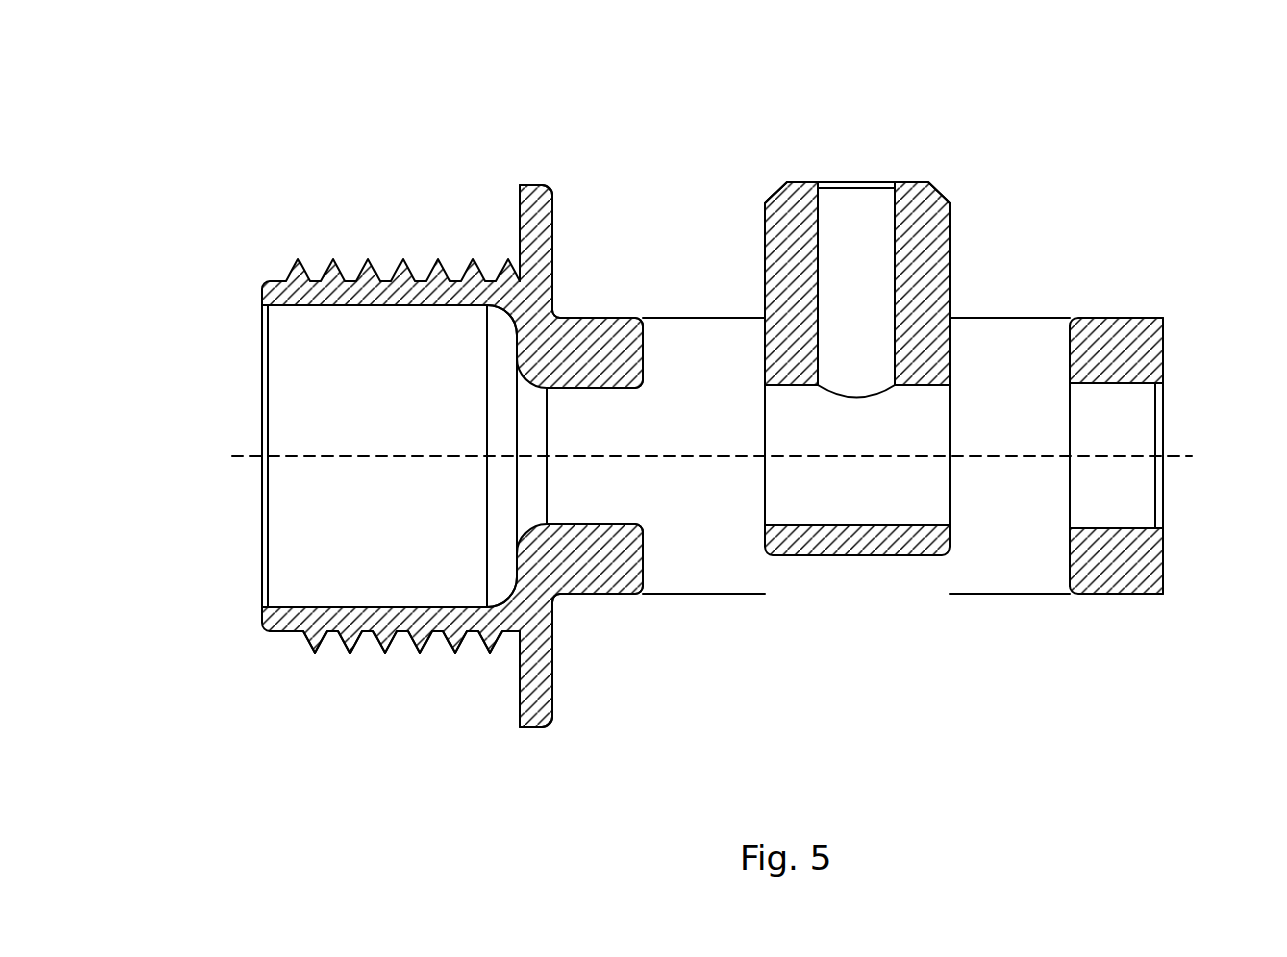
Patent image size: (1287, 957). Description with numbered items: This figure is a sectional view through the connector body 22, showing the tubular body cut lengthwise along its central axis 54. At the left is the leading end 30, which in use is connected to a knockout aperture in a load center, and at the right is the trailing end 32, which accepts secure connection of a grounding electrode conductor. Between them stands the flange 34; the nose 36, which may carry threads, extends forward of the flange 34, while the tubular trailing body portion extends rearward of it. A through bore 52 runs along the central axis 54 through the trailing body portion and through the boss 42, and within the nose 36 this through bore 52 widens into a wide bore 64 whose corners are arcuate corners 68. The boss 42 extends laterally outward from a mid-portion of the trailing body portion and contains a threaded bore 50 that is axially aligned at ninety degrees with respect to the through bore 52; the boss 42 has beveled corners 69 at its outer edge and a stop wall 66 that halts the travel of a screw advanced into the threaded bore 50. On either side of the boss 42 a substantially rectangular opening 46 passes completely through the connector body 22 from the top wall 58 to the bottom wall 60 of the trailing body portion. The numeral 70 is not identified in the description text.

The connector body 22 is at (205, 166).
The leading end 30 is at (262, 358).
The trailing end 32 is at (1163, 333).
The flange 34 is at (532, 185).
The nose 36 is at (277, 632).
The boss 42 is at (935, 195).
The opening 46 is at (700, 336).
The threaded bore 50 is at (865, 245).
The through bore 52 is at (1118, 504).
The central axis 54 is at (337, 457).
The top wall 58 is at (597, 318).
The bottom wall 60 is at (593, 594).
The wide bore 64 is at (388, 538).
The stop wall 66 is at (852, 537).
The arcuate corners 68 is at (500, 325).
The beveled corners 69 is at (778, 193).
The cavity 70 is at (802, 527).